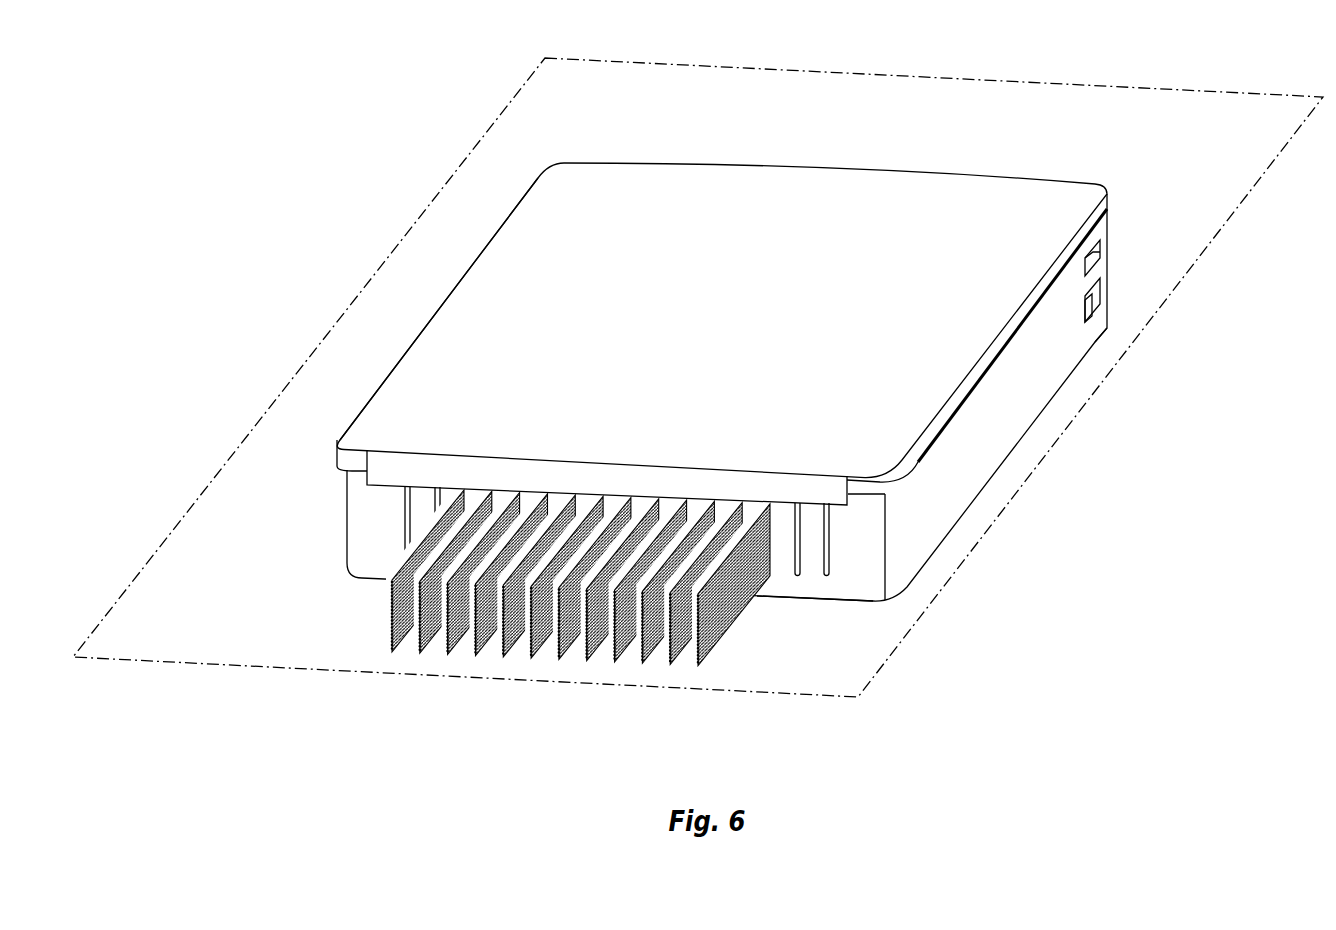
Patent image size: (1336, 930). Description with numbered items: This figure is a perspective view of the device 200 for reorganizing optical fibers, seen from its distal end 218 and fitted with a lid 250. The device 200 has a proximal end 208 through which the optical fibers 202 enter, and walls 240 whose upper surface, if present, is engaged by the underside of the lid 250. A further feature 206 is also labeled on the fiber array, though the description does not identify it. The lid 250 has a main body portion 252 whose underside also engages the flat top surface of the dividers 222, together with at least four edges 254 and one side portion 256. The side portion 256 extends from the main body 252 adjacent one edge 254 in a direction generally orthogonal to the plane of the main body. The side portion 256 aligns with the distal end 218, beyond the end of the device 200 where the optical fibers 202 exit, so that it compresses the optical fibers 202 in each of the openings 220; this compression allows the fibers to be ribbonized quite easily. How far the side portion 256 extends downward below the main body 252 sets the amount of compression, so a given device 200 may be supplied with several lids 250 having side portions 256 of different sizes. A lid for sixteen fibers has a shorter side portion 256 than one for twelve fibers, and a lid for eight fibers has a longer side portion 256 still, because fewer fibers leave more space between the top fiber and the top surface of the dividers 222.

The device 200 is at (1268, 74).
The optical fibers 202 is at (578, 611).
The fin front edge 206 is at (449, 655).
The proximal end 208 is at (1108, 231).
The distal end 218 is at (851, 603).
The openings 220 is at (832, 533).
The dividers 222 is at (790, 560).
The walls 240 is at (995, 458).
The lid 250 is at (722, 290).
The main body portion 252 is at (1017, 246).
The edges 254 is at (447, 297).
The side portion 256 is at (375, 470).